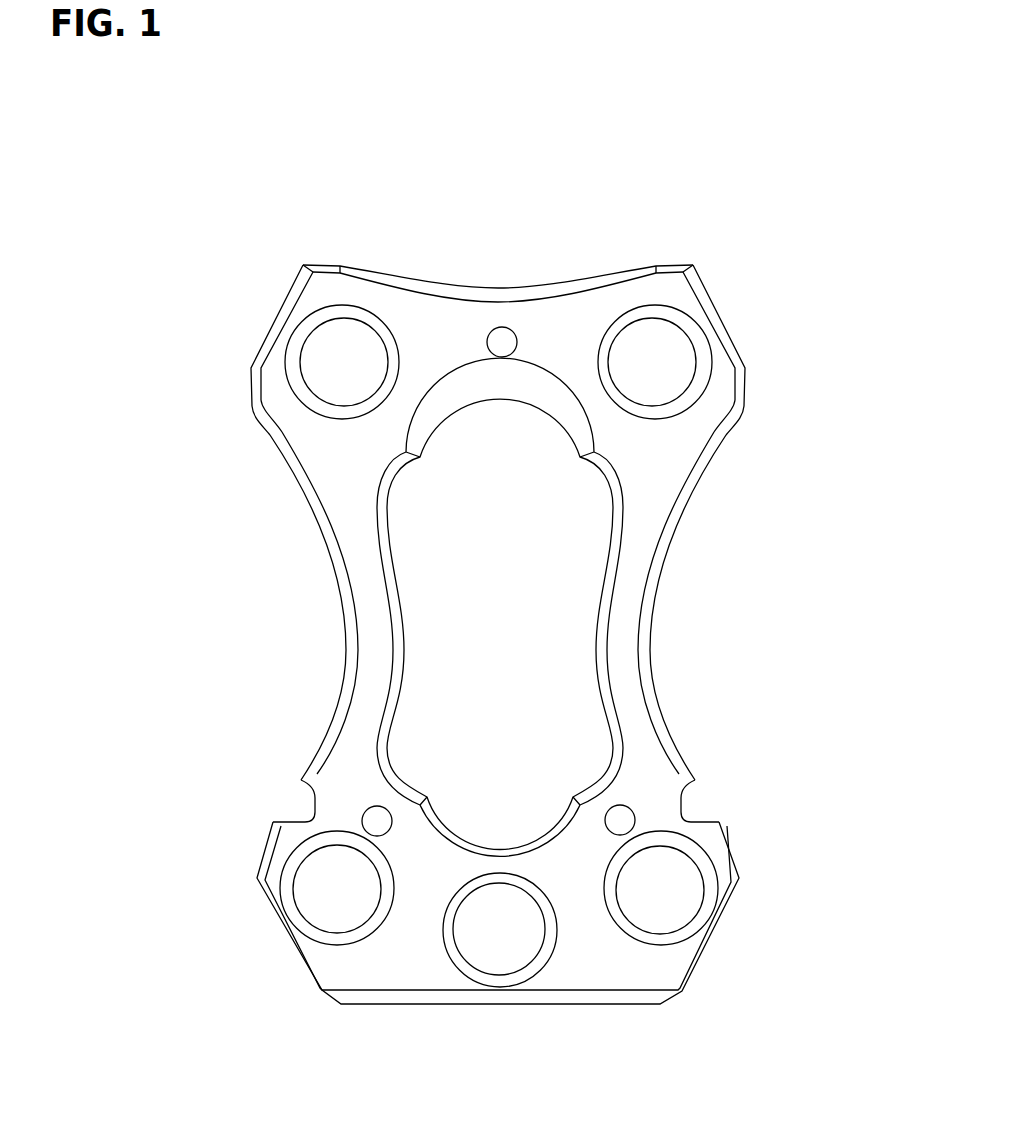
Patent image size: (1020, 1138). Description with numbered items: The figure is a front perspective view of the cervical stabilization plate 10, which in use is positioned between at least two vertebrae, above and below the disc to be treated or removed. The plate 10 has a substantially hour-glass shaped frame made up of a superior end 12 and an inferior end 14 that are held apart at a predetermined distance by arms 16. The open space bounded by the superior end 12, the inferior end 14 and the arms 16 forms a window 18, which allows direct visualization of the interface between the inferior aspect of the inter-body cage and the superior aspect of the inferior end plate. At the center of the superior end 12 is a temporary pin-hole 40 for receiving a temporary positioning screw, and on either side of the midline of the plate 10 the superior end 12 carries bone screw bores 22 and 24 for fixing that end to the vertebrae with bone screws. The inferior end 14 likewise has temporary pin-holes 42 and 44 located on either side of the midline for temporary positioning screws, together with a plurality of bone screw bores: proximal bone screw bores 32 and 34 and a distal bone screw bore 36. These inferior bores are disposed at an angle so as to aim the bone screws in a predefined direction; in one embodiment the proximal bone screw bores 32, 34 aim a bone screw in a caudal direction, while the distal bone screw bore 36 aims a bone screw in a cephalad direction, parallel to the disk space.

The cervical stabilization plate 10 is at (521, 631).
The superior end 12 is at (437, 287).
The inferior end 14 is at (425, 1003).
The arms 16 is at (377, 595).
The window 18 is at (520, 612).
The bone screw bore 22 is at (345, 368).
The bone screw bore 24 is at (653, 357).
The proximal bone screw bore 32 is at (317, 884).
The proximal bone screw bore 34 is at (648, 883).
The distal bone screw bore 36 is at (500, 927).
The temporary pin-hole 40 is at (502, 336).
The temporary pin-hole 42 is at (376, 808).
The temporary pin-hole 44 is at (618, 817).